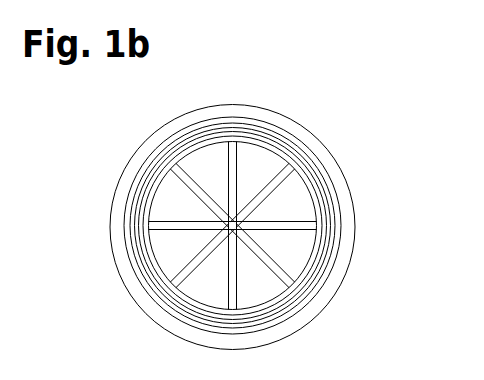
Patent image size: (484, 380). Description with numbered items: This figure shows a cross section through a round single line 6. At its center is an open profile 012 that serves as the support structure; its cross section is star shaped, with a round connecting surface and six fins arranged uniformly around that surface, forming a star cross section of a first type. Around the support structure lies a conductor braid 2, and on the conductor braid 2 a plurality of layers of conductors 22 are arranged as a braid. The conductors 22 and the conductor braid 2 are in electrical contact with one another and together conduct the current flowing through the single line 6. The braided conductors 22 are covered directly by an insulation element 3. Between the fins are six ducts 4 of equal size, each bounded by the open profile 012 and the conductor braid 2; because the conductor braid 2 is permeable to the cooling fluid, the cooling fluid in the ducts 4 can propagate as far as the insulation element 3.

The round single line 6 is at (75, 131).
The open profile 012 is at (290, 173).
The conductor braid 2 is at (317, 222).
The conductors 22 is at (321, 238).
The insulation element 3 is at (345, 272).
The ducts 4 is at (273, 284).